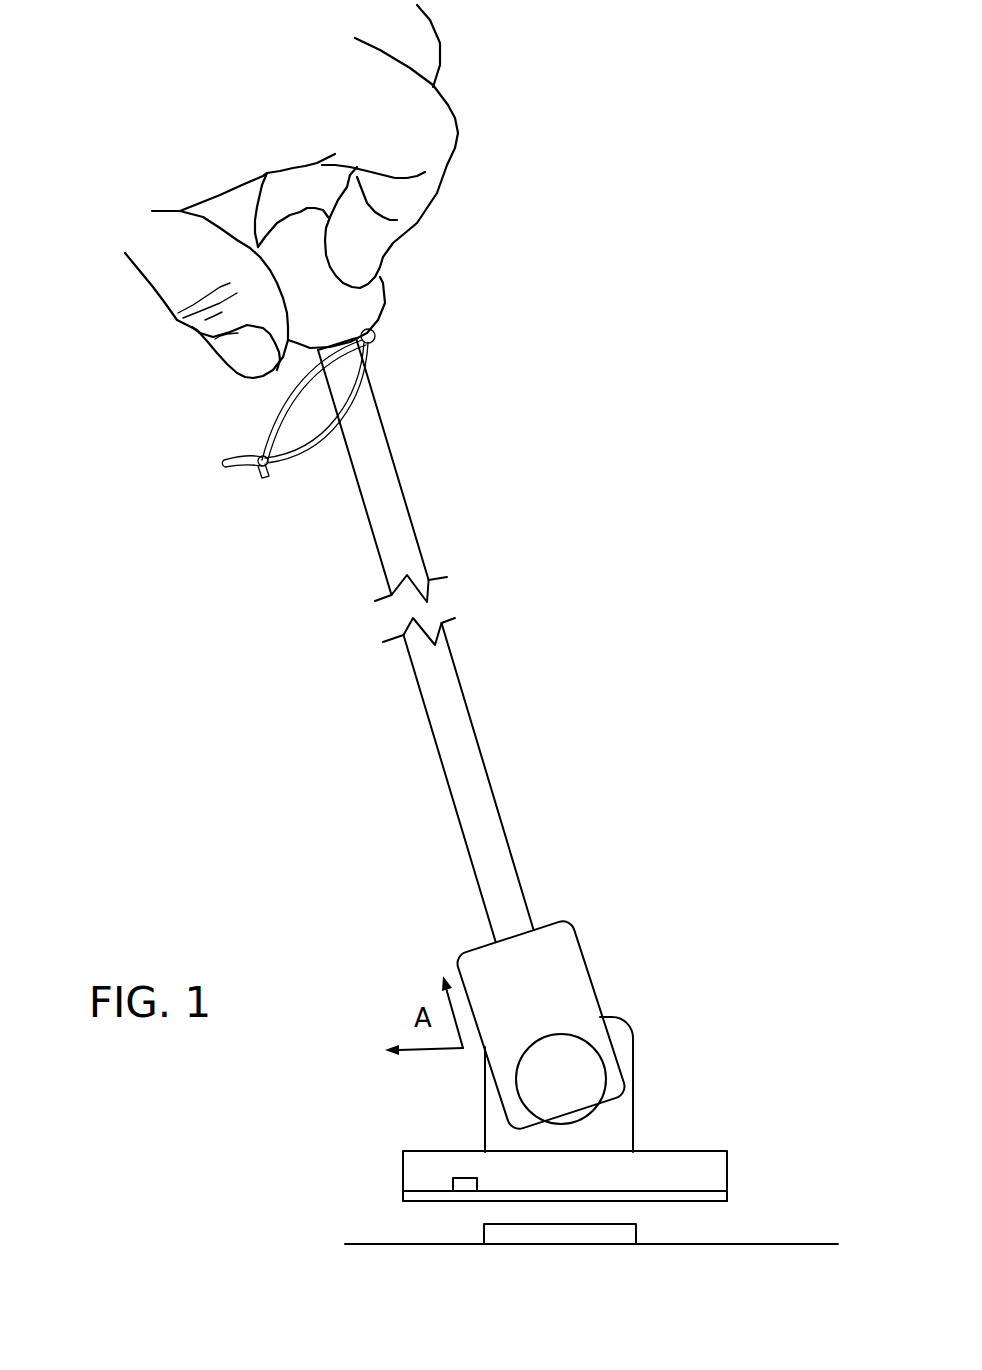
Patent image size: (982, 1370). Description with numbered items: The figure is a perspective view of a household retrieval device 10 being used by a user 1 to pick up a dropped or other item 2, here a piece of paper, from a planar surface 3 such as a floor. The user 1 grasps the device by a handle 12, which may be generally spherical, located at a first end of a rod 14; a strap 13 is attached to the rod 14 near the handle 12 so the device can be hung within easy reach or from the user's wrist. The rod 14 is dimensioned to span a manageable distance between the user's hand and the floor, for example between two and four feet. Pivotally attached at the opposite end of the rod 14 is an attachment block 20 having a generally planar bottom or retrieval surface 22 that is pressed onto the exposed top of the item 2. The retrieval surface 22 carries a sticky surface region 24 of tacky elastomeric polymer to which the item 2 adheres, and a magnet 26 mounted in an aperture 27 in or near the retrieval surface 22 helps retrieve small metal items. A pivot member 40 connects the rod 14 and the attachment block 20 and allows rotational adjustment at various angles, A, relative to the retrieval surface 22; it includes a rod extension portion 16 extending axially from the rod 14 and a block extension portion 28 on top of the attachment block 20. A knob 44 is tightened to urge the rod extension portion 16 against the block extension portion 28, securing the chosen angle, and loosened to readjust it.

The user 1 is at (183, 159).
The dropped or other item 2 is at (648, 1235).
The planar surface 3 is at (812, 1238).
The household retrieval device 10 is at (700, 513).
The handle 12 is at (375, 312).
The strap 13 is at (280, 468).
The rod 14 is at (400, 488).
The rod extension portion 16 is at (580, 932).
The attachment block 20 is at (408, 1169).
The retrieval surface 22 is at (403, 1202).
The sticky surface region 24 is at (678, 1202).
The magnet 26 is at (468, 1178).
The aperture 27 is at (452, 1186).
The block extension portion 28 is at (633, 1094).
The pivot member 40 is at (650, 1043).
The knob 44 is at (570, 1062).